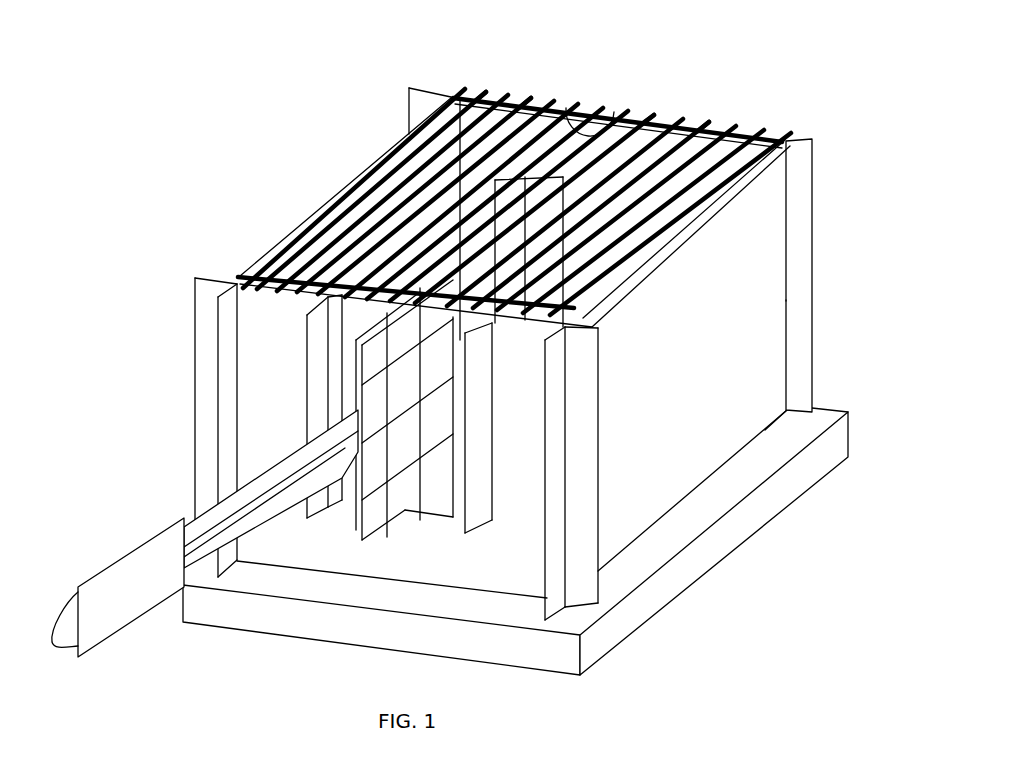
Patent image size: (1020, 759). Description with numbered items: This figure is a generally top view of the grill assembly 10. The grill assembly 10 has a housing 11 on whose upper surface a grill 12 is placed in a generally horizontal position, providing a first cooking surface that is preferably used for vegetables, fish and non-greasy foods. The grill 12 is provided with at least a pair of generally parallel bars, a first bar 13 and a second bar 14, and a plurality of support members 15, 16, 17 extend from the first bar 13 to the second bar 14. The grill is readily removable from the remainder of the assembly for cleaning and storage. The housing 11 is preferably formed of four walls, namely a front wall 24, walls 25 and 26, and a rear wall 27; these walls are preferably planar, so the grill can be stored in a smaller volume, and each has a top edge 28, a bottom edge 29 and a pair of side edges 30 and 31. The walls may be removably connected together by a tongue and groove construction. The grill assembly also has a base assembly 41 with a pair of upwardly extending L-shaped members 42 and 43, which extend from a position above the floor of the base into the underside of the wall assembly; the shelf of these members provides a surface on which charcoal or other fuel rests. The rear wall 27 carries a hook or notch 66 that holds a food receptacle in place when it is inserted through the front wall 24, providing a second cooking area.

The grill assembly 10 is at (827, 293).
The housing 11 is at (218, 483).
The grill 12 is at (493, 93).
The first bar 13 is at (457, 97).
The second bar 14 is at (247, 273).
The support member 15 is at (535, 97).
The support member 16 is at (653, 113).
The support member 17 is at (707, 120).
The front wall 24 is at (287, 340).
The wall 25 is at (670, 372).
The wall 26 is at (353, 187).
The rear wall 27 is at (812, 148).
The top edge 28 is at (650, 252).
The bottom edge 29 is at (668, 513).
The side edge 30 is at (195, 412).
The side edge 31 is at (600, 428).
The base assembly 41 is at (620, 625).
The L-shaped member 42 is at (307, 427).
The L-shaped member 43 is at (467, 500).
The notch 66 is at (597, 110).